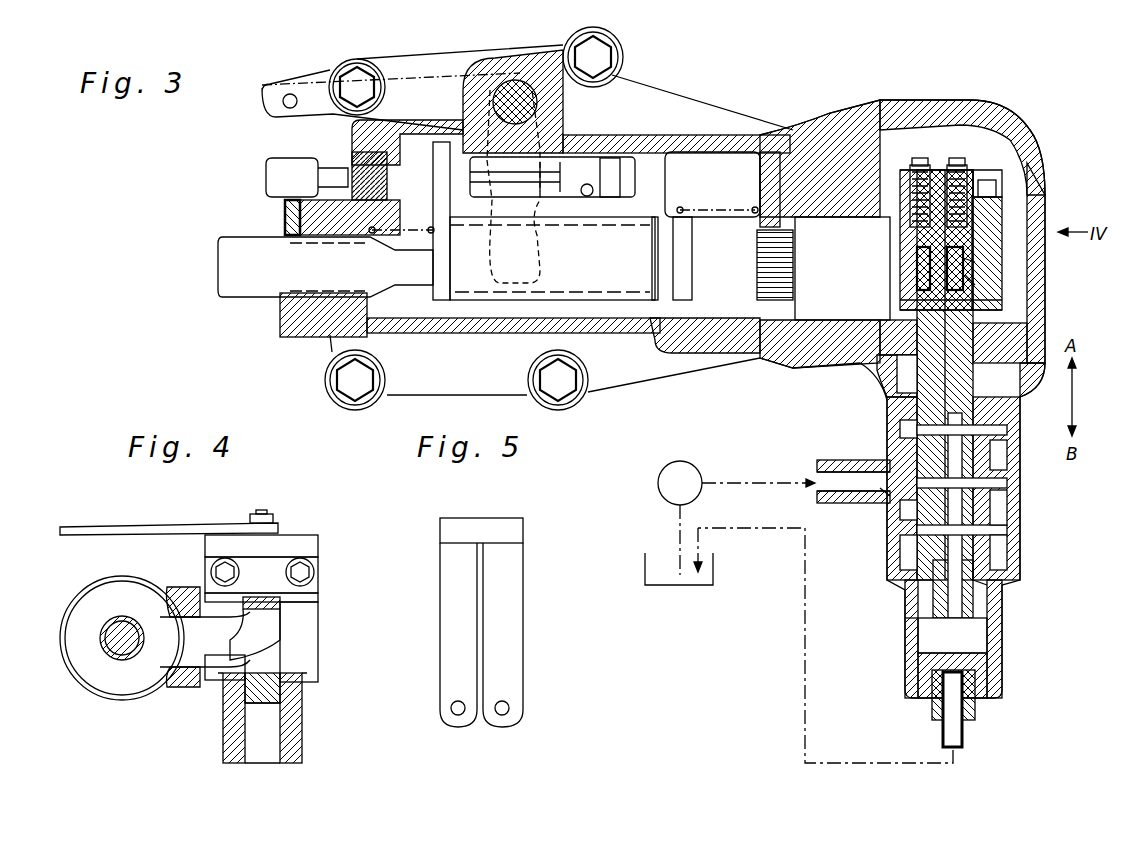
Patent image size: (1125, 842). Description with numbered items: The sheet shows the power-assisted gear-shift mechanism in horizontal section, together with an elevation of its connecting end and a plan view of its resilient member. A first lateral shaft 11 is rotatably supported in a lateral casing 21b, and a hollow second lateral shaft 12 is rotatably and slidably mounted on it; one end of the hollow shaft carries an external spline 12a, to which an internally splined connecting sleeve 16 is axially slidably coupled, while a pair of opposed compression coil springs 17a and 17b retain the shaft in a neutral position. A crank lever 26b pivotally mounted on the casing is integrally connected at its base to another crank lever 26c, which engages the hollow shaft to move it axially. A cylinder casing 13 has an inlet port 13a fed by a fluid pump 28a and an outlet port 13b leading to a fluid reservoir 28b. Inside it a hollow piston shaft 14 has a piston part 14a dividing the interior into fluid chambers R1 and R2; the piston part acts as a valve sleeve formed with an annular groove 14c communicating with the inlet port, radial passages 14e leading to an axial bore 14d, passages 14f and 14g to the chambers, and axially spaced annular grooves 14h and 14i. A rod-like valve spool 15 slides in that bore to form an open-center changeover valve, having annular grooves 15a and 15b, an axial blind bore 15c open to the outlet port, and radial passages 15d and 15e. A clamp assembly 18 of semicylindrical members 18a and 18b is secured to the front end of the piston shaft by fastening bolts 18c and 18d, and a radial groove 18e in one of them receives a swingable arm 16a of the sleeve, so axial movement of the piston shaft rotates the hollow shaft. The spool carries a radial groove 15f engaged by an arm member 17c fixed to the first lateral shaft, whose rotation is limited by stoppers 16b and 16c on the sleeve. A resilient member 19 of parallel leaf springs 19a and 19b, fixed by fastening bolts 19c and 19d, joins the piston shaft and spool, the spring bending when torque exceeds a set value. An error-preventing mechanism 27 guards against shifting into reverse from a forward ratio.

In FIG. 3, the first lateral shaft 11 is at (412, 275).
In FIG. 3, the second lateral shaft 12 is at (497, 302).
In FIG. 3, the external spline 12a is at (772, 305).
In FIG. 3, the cylinder casing 13 is at (1003, 645).
In FIG. 3, the inlet port 13a is at (882, 493).
In FIG. 3, the outlet port 13b is at (905, 668).
In FIG. 3, the piston shaft 14 is at (1000, 605).
In FIG. 4, the piston shaft 14 is at (303, 728).
In FIG. 3, the piston part 14a is at (900, 550).
In FIG. 3, the annular groove 14c is at (1007, 530).
In FIG. 3, the axial bore 14d is at (918, 620).
In FIG. 3, the radial passages 14e is at (1007, 485).
In FIG. 3, the passage 14f is at (1007, 455).
In FIG. 3, the passage 14g is at (1005, 520).
In FIG. 3, the annular groove 14h is at (1007, 430).
In FIG. 3, the annular groove 14i is at (985, 595).
In FIG. 3, the valve spool 15 is at (968, 320).
In FIG. 4, the valve spool 15 is at (262, 745).
In FIG. 3, the annular groove 15a is at (880, 462).
In FIG. 3, the annular groove 15b is at (900, 515).
In FIG. 3, the axial blind bore 15c is at (952, 575).
In FIG. 3, the radial passage 15d is at (900, 428).
In FIG. 3, the radial passage 15e is at (922, 580).
In FIG. 3, the radial groove 15f is at (965, 258).
In FIG. 4, the radial groove 15f is at (265, 620).
In FIG. 3, the connecting sleeve 16 is at (812, 322).
In FIG. 4, the connecting sleeve 16 is at (122, 700).
In FIG. 3, the swingable arm 16a is at (947, 280).
In FIG. 4, the stopper 16b is at (178, 588).
In FIG. 4, the stopper 16c is at (178, 690).
In FIG. 3, the compression coil spring 17a is at (402, 228).
In FIG. 3, the compression coil spring 17b is at (708, 205).
In FIG. 3, the arm member 17c is at (965, 280).
In FIG. 4, the arm member 17c is at (222, 682).
In FIG. 3, the clamp 18 is at (1000, 230).
In FIG. 4, the clamp 18 is at (318, 650).
In FIG. 3, the semicylindrical member 18a is at (905, 228).
In FIG. 4, the semicylindrical member 18a is at (318, 545).
In FIG. 3, the semicylindrical member 18b is at (1003, 310).
In FIG. 4, the semicylindrical member 18b is at (318, 598).
In FIG. 4, the fastening bolt 18c is at (212, 562).
In FIG. 3, the fastening bolt 18d is at (1000, 160).
In FIG. 4, the fastening bolt 18d is at (314, 572).
In FIG. 3, the radial groove 18e is at (916, 262).
In FIG. 4, the resilient member 19 is at (118, 525).
In FIG. 5, the resilient member 19 is at (505, 518).
In FIG. 3, the leaf spring 19a is at (912, 180).
In FIG. 5, the leaf spring 19a is at (440, 593).
In FIG. 3, the leaf spring 19b is at (970, 170).
In FIG. 5, the leaf spring 19b is at (515, 593).
In FIG. 3, the fastening bolt 19c is at (920, 158).
In FIG. 3, the fastening bolt 19d is at (957, 158).
In FIG. 4, the fastening bolt 19d is at (265, 512).
In FIG. 3, the lateral casing 21b is at (680, 357).
In FIG. 3, the crank lever 26b is at (310, 92).
In FIG. 3, the crank lever 26c is at (545, 258).
In FIG. 3, the error-preventing mechanism 27 is at (580, 168).
In FIG. 3, the fluid pump 28a is at (698, 466).
In FIG. 3, the fluid reservoir 28b is at (645, 553).
In FIG. 3, the fluid chamber R1 is at (897, 400).
In FIG. 3, the fluid chamber R2 is at (1000, 555).